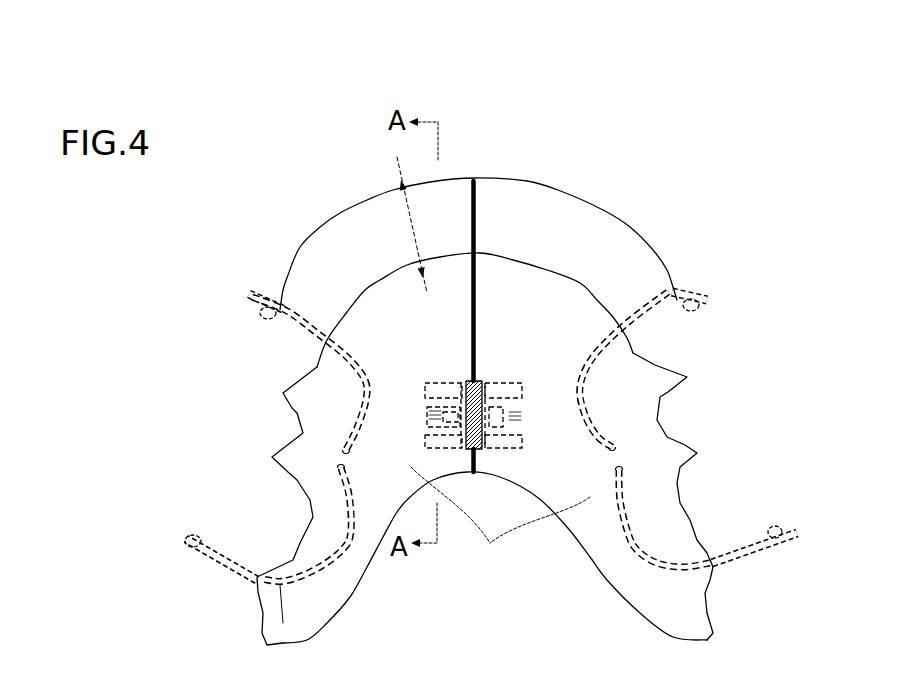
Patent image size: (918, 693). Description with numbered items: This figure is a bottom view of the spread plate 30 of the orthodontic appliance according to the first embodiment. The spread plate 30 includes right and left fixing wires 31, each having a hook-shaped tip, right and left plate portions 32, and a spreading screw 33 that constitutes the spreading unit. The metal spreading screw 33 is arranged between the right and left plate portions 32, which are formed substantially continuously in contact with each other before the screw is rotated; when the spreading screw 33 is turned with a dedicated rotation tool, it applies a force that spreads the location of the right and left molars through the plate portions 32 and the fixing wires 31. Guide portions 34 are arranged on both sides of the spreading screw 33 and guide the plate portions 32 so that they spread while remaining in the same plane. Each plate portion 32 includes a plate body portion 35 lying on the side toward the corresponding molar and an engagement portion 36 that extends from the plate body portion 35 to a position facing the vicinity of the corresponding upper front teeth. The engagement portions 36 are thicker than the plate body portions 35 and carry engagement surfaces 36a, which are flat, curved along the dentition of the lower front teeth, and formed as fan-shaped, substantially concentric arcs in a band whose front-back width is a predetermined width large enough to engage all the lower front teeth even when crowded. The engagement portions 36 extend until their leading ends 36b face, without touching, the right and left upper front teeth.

The spread plate 30 is at (664, 200).
The fixing wire 31 is at (253, 290).
The plate portion 32 is at (363, 541).
The spreading screw 33 is at (523, 413).
The guide portion 34 is at (513, 388).
The plate body portion 35 is at (490, 544).
The engagement portion 36 is at (369, 200).
The engagement surface 36a is at (370, 243).
The leading end 36b is at (500, 172).